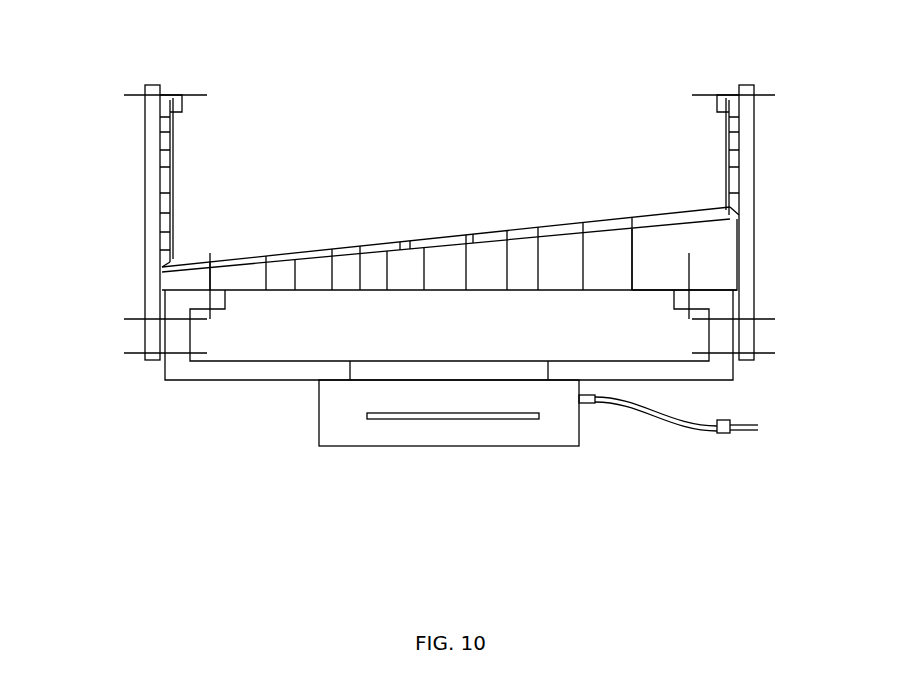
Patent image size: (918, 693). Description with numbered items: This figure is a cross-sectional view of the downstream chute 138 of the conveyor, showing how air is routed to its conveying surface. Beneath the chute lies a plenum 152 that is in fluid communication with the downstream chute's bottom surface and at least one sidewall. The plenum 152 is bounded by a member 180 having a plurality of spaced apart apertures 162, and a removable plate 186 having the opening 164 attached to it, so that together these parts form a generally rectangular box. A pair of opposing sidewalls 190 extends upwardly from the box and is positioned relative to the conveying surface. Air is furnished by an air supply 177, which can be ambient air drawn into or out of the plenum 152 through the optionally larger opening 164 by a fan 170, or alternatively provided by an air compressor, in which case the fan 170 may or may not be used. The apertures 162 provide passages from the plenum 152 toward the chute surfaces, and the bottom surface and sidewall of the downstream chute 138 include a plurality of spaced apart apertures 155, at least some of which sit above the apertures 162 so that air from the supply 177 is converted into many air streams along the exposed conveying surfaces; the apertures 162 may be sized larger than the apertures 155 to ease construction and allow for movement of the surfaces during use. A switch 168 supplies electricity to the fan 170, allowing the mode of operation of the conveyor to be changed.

The downstream chute 138 is at (404, 86).
The opposing sidewalls 190 is at (148, 189).
The removable plate 186 is at (660, 270).
The member 180 is at (720, 370).
The plenum 152 is at (272, 335).
The opening 164 is at (352, 353).
The apertures 155 is at (403, 255).
The apertures 162 is at (288, 280).
The air supply 177 is at (467, 497).
The fan 170 is at (372, 417).
The switch 168 is at (724, 434).